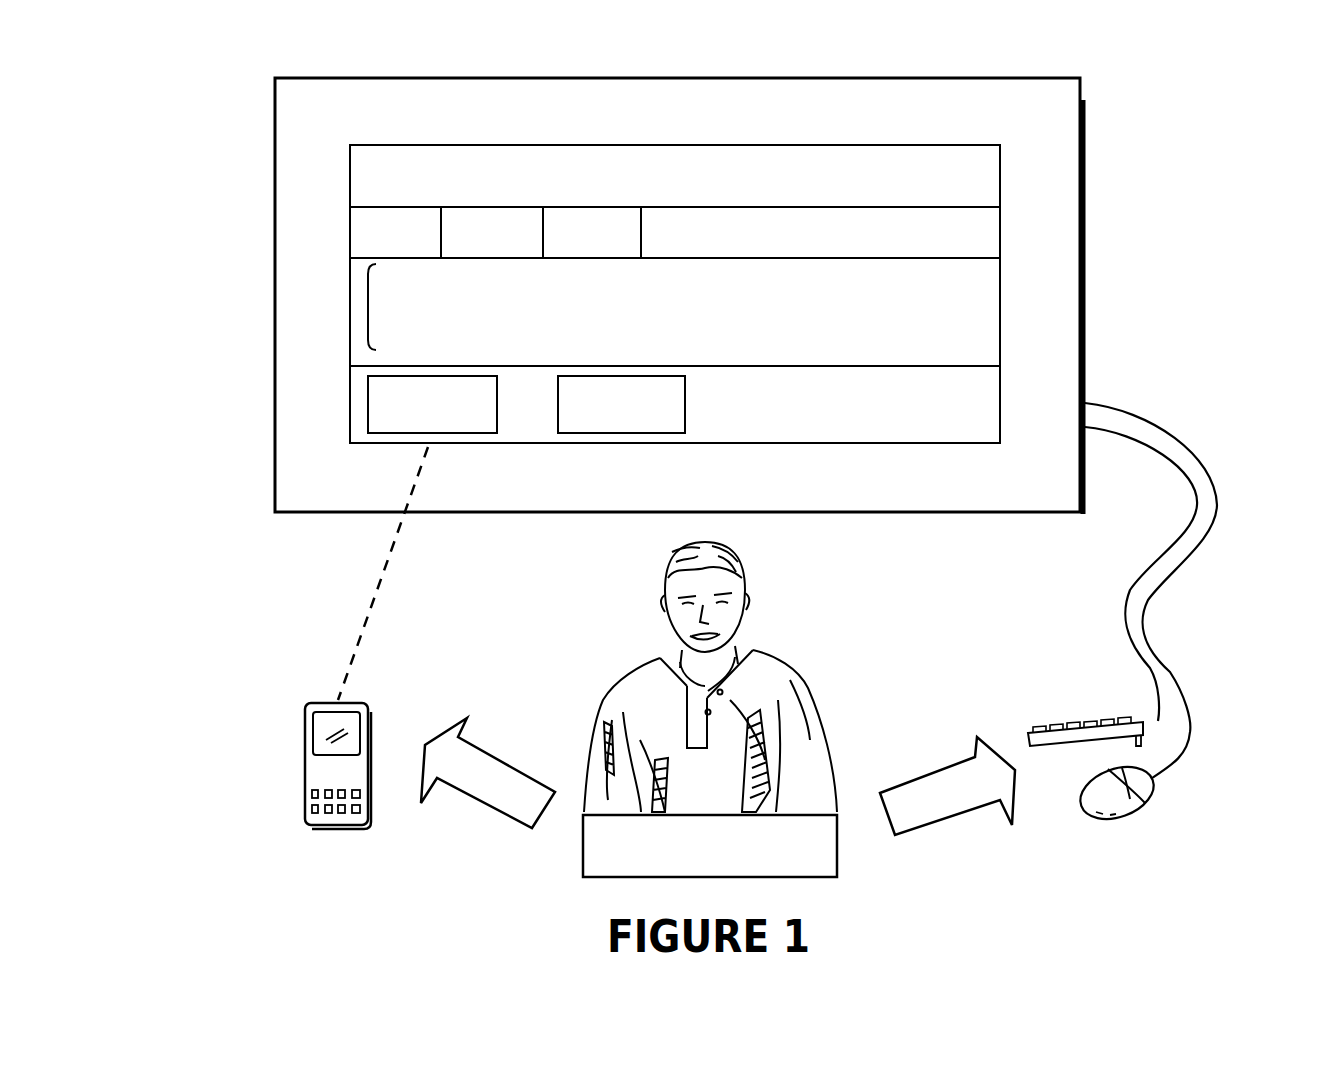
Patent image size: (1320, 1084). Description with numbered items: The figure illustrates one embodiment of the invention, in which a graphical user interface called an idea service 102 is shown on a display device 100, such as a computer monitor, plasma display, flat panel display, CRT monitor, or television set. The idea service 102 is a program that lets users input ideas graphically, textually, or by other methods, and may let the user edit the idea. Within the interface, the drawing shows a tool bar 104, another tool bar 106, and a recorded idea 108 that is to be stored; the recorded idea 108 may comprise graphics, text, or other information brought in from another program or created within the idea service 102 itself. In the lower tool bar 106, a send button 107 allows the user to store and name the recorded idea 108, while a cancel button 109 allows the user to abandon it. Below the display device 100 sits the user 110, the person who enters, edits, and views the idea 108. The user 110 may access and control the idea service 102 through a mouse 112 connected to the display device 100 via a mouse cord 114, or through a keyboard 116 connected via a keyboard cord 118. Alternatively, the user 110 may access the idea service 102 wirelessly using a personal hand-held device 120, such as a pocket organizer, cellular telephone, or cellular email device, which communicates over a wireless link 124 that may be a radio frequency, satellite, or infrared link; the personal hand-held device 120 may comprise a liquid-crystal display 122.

The display device 100 is at (285, 78).
The idea service 102 is at (837, 146).
The tool bar 104 is at (985, 258).
The tool bar 106 is at (920, 443).
The send button 107 is at (575, 433).
The recorded idea 108 is at (362, 303).
The cancel button 109 is at (368, 430).
The user 110 is at (620, 678).
The mouse 112 is at (1083, 806).
The mouse cord 114 is at (1192, 727).
The keyboard 116 is at (1027, 746).
The keyboard cord 118 is at (1168, 543).
The personal hand-held device 120 is at (305, 807).
The liquid-crystal display (LCD) 122 is at (306, 728).
The wireless link 124 is at (378, 603).